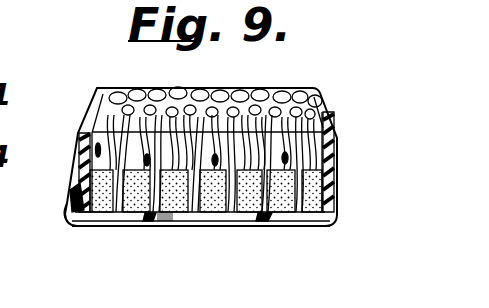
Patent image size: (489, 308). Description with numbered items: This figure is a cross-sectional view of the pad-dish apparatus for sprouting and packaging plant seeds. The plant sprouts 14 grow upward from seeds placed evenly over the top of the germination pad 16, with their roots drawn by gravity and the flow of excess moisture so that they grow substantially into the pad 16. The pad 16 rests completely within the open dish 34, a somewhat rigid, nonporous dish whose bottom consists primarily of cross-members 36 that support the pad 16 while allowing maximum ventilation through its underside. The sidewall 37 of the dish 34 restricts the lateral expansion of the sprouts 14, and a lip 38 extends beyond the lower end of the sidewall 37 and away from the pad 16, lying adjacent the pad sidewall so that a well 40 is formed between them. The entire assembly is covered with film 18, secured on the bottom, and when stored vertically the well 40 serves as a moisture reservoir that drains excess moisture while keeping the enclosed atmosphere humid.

The plant sprouts 14 is at (300, 92).
The germination pad 16 is at (222, 193).
The film 18 is at (129, 86).
The open dish 34 is at (331, 165).
The cross-members 36 is at (171, 222).
The sidewall 37 is at (81, 162).
The lip 38 is at (64, 209).
The well 40 is at (83, 227).